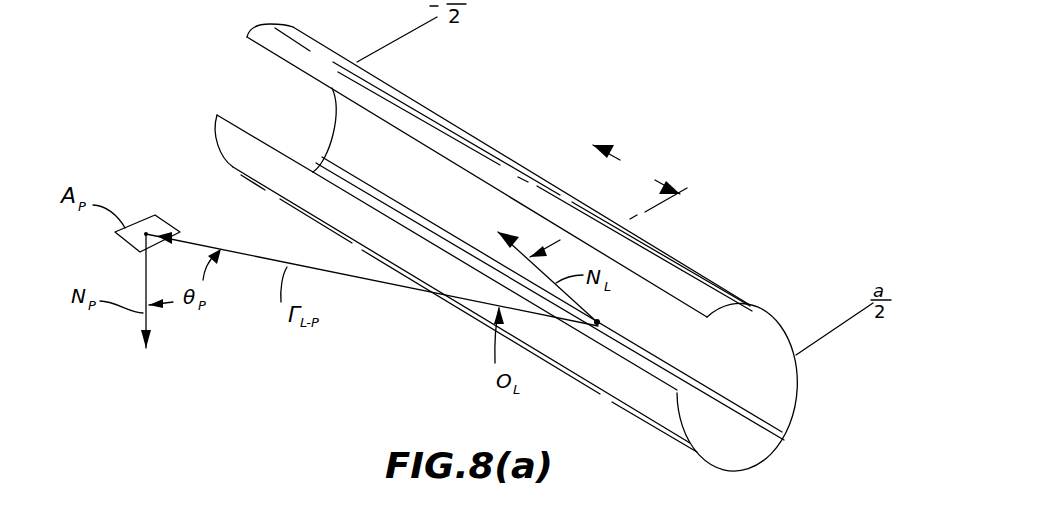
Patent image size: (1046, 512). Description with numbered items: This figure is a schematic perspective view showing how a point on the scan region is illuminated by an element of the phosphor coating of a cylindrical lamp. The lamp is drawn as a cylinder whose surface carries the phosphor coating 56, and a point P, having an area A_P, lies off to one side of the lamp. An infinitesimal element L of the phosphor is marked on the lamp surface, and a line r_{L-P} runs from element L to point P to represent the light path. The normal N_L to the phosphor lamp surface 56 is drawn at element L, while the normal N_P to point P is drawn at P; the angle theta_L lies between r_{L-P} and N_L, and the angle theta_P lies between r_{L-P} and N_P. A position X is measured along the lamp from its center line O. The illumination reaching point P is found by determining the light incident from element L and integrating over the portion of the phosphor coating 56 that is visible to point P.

The phosphor coating 56 is at (706, 268).
The infinitesimal element of the phosphor L is at (607, 321).
The point P is at (155, 215).
The center line of lamp O is at (543, 170).
The position from the center line of lamp X is at (636, 169).